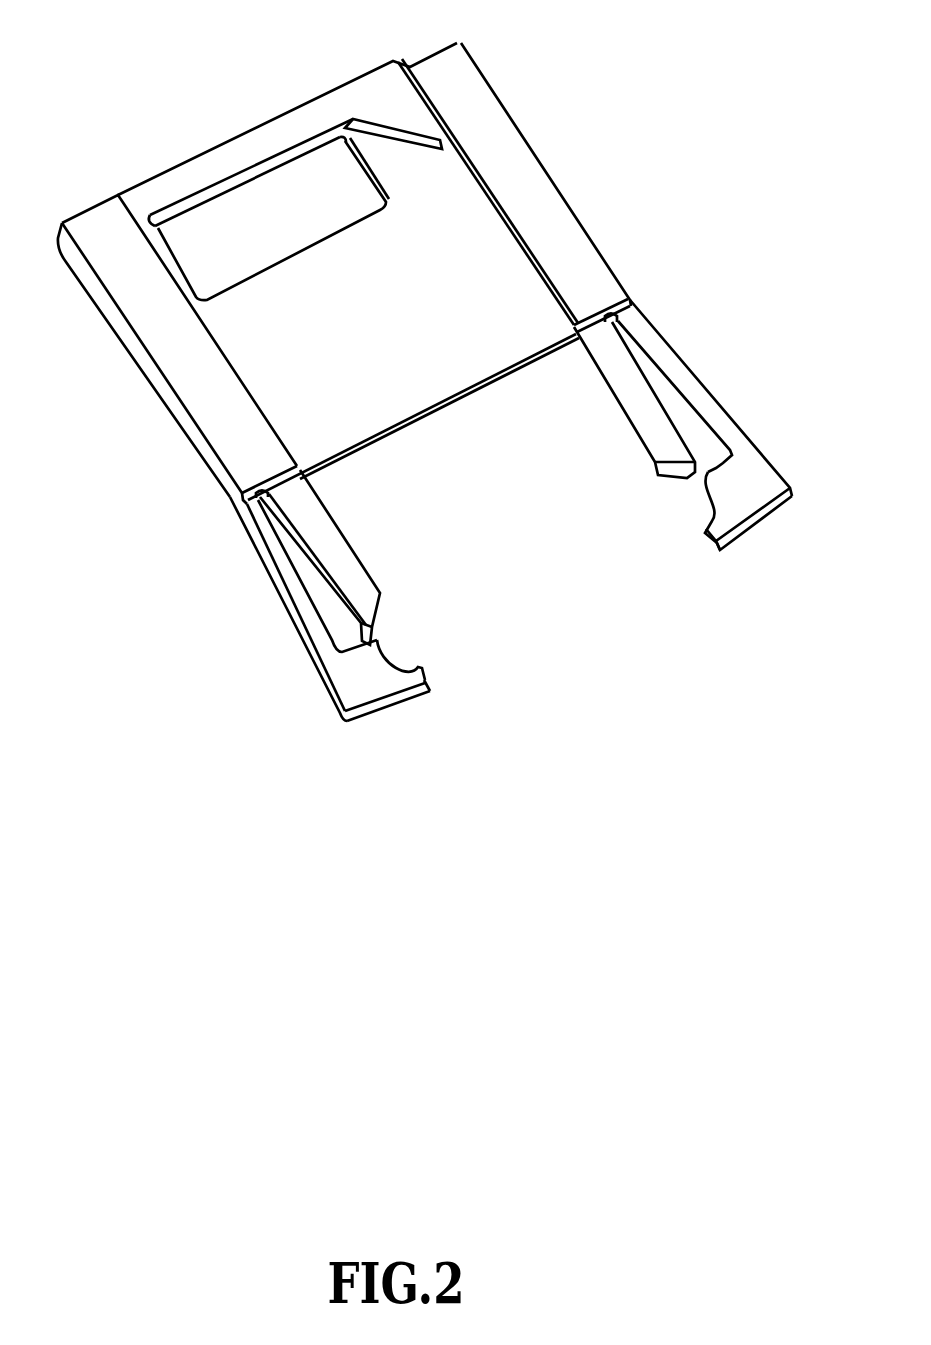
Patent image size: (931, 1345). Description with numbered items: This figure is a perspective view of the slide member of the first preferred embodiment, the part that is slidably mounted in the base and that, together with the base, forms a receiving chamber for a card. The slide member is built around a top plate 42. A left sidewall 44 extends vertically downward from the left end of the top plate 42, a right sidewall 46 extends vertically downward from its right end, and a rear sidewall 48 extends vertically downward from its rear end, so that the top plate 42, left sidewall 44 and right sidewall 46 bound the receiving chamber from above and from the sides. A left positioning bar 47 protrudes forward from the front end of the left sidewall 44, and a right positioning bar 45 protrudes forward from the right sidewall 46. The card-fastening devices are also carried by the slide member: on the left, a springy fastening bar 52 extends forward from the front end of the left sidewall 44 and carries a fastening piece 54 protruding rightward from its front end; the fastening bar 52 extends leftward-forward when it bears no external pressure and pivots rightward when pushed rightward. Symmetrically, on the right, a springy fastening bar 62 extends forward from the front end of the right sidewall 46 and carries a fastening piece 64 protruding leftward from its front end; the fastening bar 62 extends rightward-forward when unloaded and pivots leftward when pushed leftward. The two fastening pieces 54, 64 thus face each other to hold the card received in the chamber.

The top plate 42 is at (372, 325).
The left sidewall 44 is at (527, 227).
The right positioning bar 45 is at (340, 555).
The right sidewall 46 is at (185, 357).
The left positioning bar 47 is at (655, 428).
The rear sidewall 48 is at (255, 153).
The fastening bar 52 is at (693, 395).
The fastening piece 54 is at (720, 527).
The fastening bar 62 is at (298, 597).
The fastening piece 64 is at (413, 680).